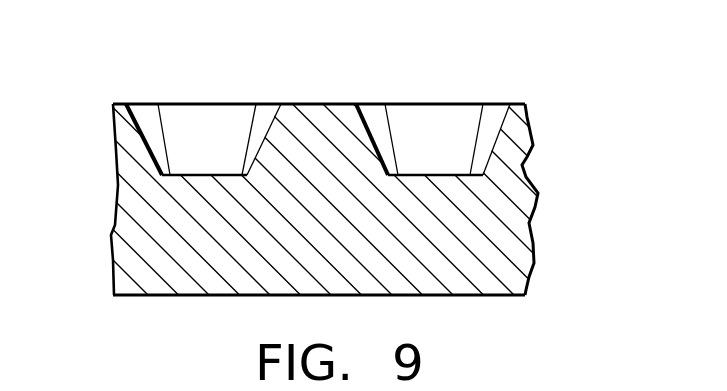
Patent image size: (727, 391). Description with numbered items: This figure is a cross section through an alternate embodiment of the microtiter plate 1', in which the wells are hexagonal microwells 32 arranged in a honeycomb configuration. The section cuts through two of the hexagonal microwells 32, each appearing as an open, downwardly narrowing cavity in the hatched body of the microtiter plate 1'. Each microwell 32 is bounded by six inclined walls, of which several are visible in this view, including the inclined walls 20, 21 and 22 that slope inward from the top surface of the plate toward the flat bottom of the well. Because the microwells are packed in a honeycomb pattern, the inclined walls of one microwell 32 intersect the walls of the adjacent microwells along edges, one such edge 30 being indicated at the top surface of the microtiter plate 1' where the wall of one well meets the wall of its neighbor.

The microtiter plate 1' is at (363, 200).
The inclined wall 20 is at (148, 118).
The inclined wall 21 is at (180, 115).
The inclined wall 22 is at (260, 120).
The edge 30 is at (349, 102).
The hexagonal microwell 32 is at (190, 147).